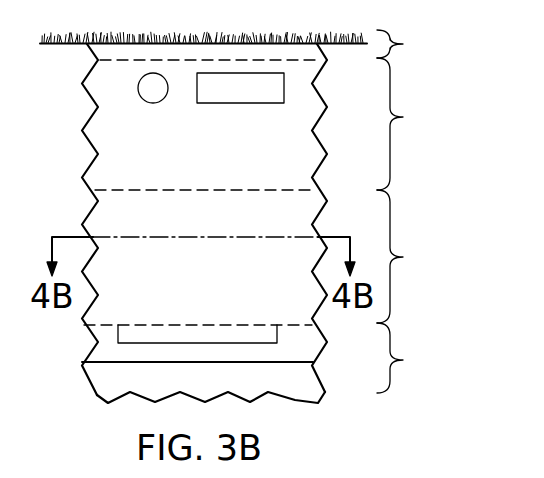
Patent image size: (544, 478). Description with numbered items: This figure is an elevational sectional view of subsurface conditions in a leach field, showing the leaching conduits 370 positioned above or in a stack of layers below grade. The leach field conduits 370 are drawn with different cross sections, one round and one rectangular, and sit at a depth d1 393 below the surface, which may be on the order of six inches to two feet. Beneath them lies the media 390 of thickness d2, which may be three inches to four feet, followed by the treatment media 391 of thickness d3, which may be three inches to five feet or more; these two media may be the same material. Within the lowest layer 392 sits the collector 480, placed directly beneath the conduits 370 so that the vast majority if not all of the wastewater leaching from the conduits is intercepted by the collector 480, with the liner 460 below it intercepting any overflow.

The depth d1 393 is at (433, 47).
The media layer 390 is at (433, 121).
The treatment media layer 391 is at (433, 262).
The layer 392 is at (433, 365).
The leaching conduits 370 is at (153, 104).
The collector 480 is at (279, 333).
The liner 460 is at (205, 363).